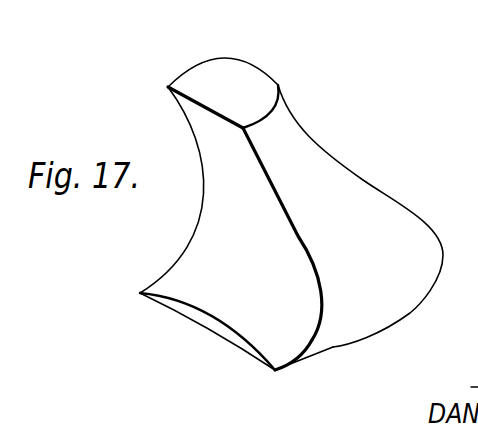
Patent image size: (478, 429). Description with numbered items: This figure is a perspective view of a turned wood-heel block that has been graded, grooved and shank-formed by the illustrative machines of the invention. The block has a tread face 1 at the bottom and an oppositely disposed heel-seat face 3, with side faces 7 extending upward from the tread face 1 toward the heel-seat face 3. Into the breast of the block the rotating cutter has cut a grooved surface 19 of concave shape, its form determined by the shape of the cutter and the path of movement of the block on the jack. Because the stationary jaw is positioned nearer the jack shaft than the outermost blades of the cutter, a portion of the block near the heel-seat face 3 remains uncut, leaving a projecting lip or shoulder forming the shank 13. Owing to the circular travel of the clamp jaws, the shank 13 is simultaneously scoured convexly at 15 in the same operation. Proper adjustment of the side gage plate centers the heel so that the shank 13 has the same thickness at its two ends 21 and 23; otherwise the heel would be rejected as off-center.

The tread face 1 is at (223, 93).
The heel-seat face 3 is at (410, 313).
The side faces 7 is at (293, 234).
The shank 13 is at (205, 326).
The convexly scoured surface of the shank 15 is at (232, 307).
The grooved surface 19 is at (253, 247).
The end of the shank 21 is at (140, 293).
The end of the shank 23 is at (275, 370).